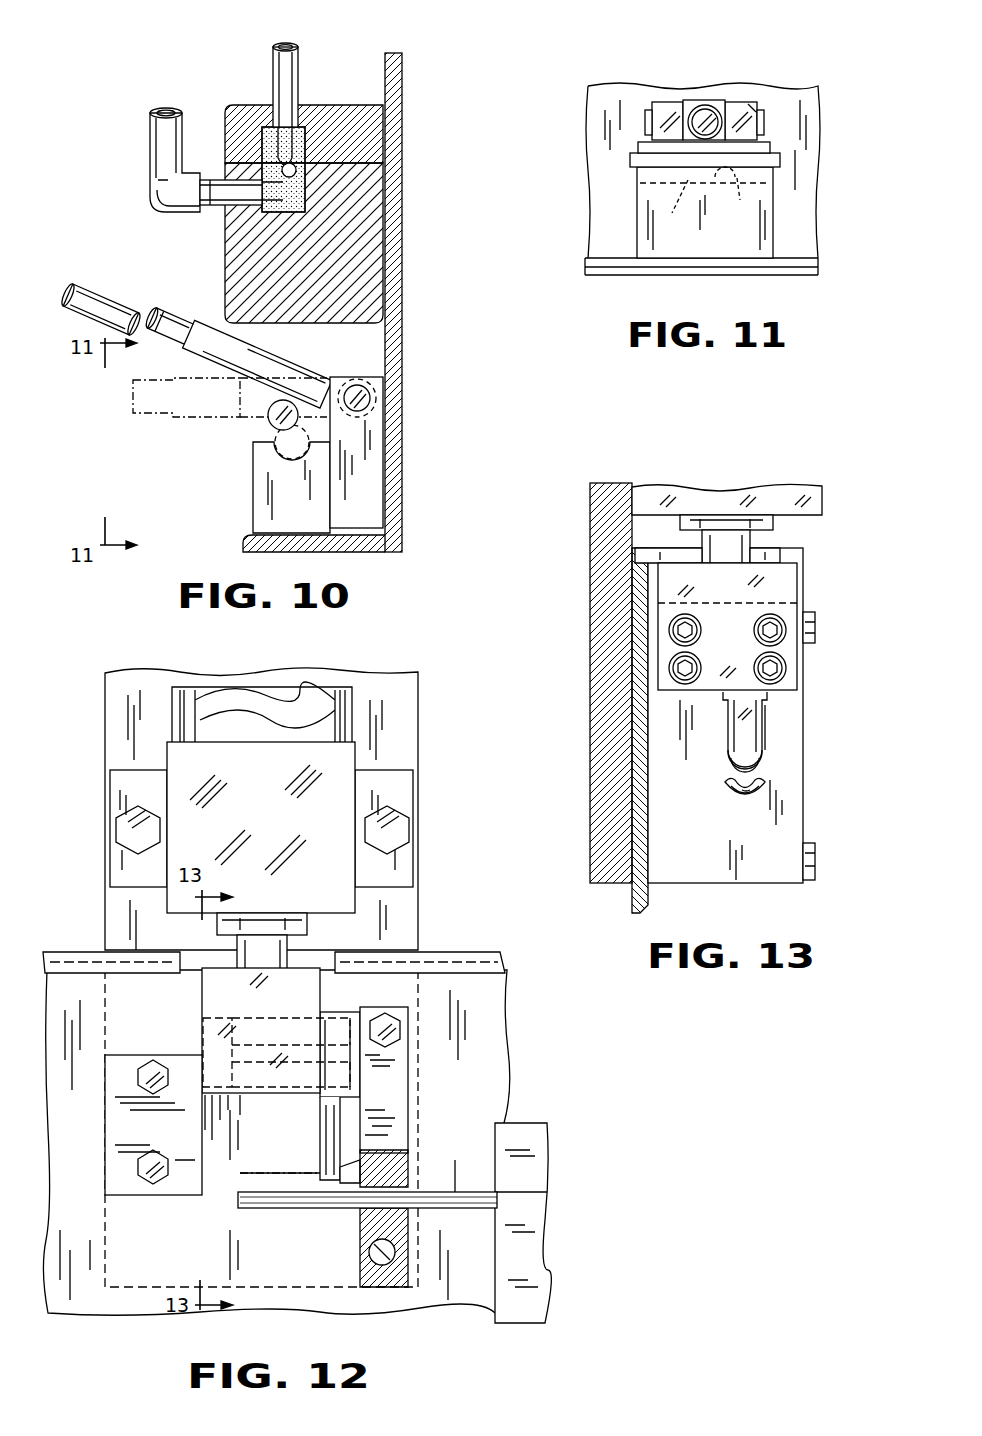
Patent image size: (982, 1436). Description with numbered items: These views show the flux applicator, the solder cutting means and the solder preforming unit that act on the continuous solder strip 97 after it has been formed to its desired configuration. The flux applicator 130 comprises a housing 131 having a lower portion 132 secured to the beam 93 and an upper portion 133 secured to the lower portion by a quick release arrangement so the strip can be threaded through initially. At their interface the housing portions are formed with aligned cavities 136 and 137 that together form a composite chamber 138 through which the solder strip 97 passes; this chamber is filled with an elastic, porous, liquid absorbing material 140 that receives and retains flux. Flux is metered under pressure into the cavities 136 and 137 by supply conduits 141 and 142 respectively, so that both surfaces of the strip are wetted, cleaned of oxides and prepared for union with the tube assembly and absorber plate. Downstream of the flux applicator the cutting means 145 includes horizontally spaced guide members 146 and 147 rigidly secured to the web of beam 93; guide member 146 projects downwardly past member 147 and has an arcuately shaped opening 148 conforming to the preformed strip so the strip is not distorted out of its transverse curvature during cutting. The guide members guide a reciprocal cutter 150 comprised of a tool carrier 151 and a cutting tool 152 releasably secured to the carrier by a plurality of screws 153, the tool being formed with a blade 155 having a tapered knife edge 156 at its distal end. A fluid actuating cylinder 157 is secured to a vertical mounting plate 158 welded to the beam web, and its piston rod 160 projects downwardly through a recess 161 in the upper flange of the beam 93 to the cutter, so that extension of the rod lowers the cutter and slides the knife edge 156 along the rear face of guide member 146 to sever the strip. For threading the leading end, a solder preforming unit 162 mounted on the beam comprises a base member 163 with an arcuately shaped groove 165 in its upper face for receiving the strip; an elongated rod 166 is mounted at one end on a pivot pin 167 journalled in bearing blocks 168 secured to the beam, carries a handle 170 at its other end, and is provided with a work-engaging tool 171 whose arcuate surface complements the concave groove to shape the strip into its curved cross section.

In FIG. 10, the beam 93 is at (396, 367).
In FIG. 11, the beam 93 is at (607, 108).
In FIG. 13, the beam 93 is at (630, 900).
In FIG. 12, the beam 93 is at (488, 1032).
In FIG. 10, the solder strip 97 is at (291, 162).
In FIG. 13, the solder strip 97 is at (752, 790).
In FIG. 12, the solder strip 97 is at (298, 1203).
In FIG. 10, the flux applicator 130 is at (296, 166).
In FIG. 12, the flux applicator 130 is at (552, 1123).
In FIG. 10, the housing 131 is at (341, 166).
In FIG. 10, the lower portion 132 is at (380, 258).
In FIG. 10, the upper portion 133 is at (380, 120).
In FIG. 10, the cavity 136 is at (302, 197).
In FIG. 10, the cavity 137 is at (303, 127).
In FIG. 10, the composite chamber 138 is at (272, 130).
In FIG. 10, the liquid absorbing material 140 is at (265, 177).
In FIG. 10, the supply conduit 141 is at (283, 48).
In FIG. 10, the supply conduit 142 is at (205, 208).
In FIG. 13, the cutting means 145 is at (704, 661).
In FIG. 12, the cutting means 145 is at (274, 964).
In FIG. 12, the guide member 146 is at (397, 1123).
In FIG. 12, the guide member 147 is at (118, 1120).
In FIG. 13, the arcuately shaped opening 148 is at (735, 800).
In FIG. 12, the arcuately shaped opening 148 is at (397, 1208).
In FIG. 13, the reciprocal cutter 150 is at (768, 618).
In FIG. 12, the reciprocal cutter 150 is at (305, 1075).
In FIG. 13, the tool carrier 151 is at (785, 612).
In FIG. 12, the tool carrier 151 is at (212, 987).
In FIG. 12, the cutting tool 152 is at (353, 1053).
In FIG. 13, the screws 153 is at (762, 657).
In FIG. 12, the screws 153 is at (253, 1067).
In FIG. 13, the blade 155 is at (735, 722).
In FIG. 12, the blade 155 is at (345, 1112).
In FIG. 13, the knife edge 156 is at (728, 760).
In FIG. 12, the knife edge 156 is at (340, 1165).
In FIG. 13, the fluid actuating cylinder 157 is at (712, 497).
In FIG. 12, the fluid actuating cylinder 157 is at (238, 697).
In FIG. 13, the vertical mounting plate 158 is at (592, 512).
In FIG. 12, the vertical mounting plate 158 is at (393, 693).
In FIG. 13, the piston rod 160 is at (742, 545).
In FIG. 12, the piston rod 160 is at (263, 950).
In FIG. 13, the recess 161 is at (680, 553).
In FIG. 12, the recess 161 is at (333, 953).
In FIG. 10, the solder preforming unit 162 is at (324, 451).
In FIG. 11, the solder preforming unit 162 is at (663, 200).
In FIG. 10, the base member 163 is at (258, 472).
In FIG. 10, the arcuately shaped groove 165 is at (288, 468).
In FIG. 11, the arcuately shaped groove 165 is at (738, 202).
In FIG. 10, the elongated rod 166 is at (201, 312).
In FIG. 11, the elongated rod 166 is at (712, 107).
In FIG. 10, the pivot pin 167 is at (357, 385).
In FIG. 11, the pivot pin 167 is at (752, 110).
In FIG. 10, the bearing blocks 168 is at (368, 467).
In FIG. 11, the bearing blocks 168 is at (663, 108).
In FIG. 10, the handle 170 is at (78, 275).
In FIG. 11, the handle 170 is at (700, 118).
In FIG. 10, the work-engaging tool 171 is at (268, 423).
In FIG. 11, the work-engaging tool 171 is at (674, 209).